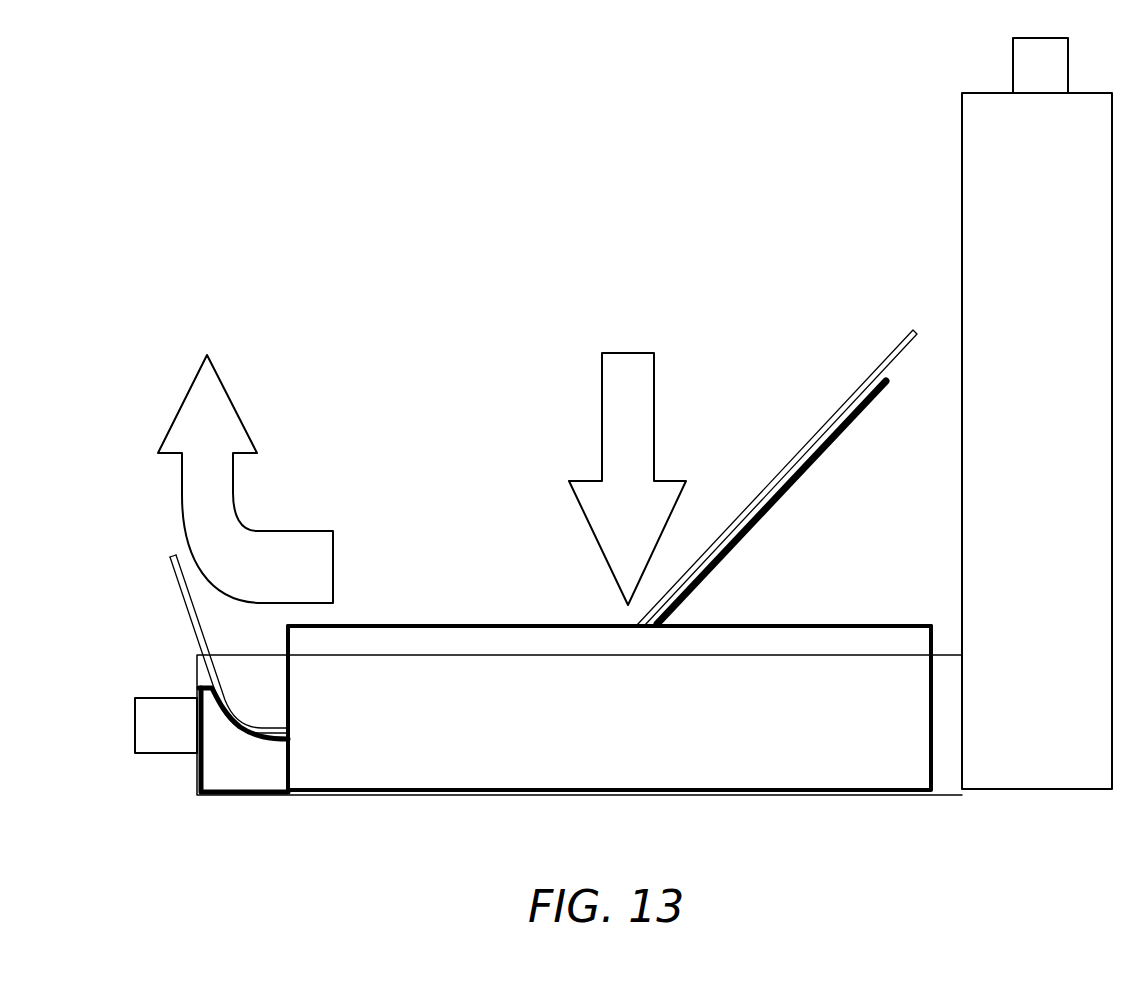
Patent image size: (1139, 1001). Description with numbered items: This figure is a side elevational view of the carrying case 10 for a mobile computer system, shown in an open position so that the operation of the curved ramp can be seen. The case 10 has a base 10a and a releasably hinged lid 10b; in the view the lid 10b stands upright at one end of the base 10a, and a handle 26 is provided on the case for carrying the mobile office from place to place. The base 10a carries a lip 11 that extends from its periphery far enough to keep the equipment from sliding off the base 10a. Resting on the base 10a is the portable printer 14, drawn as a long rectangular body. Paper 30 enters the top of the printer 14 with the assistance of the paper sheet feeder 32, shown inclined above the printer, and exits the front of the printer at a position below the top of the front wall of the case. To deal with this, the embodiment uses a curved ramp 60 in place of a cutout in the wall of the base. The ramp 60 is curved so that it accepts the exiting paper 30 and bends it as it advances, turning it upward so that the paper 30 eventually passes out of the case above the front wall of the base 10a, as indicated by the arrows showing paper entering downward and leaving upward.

The carrying case 10 is at (943, 242).
The base 10a is at (762, 795).
The releasably hinged lid 10b is at (975, 180).
The lip 11 is at (452, 730).
The portable printer 14 is at (453, 636).
The handle 26 is at (1027, 60).
The paper 30 is at (186, 598).
The paper sheet feeder 32 is at (772, 508).
The curved ramp 60 is at (237, 752).